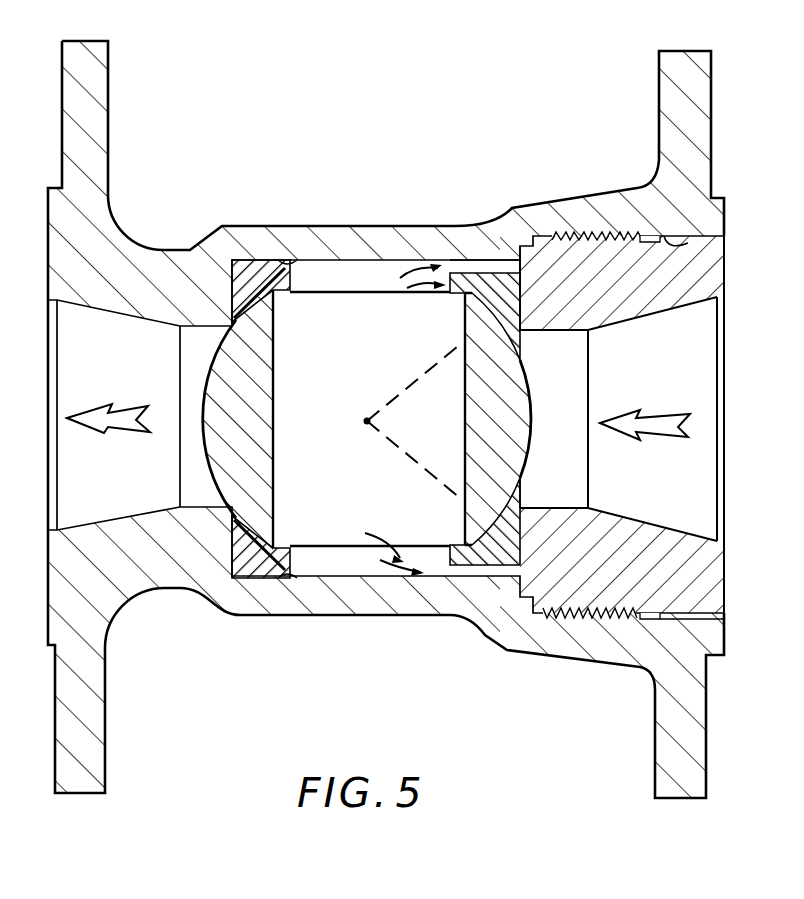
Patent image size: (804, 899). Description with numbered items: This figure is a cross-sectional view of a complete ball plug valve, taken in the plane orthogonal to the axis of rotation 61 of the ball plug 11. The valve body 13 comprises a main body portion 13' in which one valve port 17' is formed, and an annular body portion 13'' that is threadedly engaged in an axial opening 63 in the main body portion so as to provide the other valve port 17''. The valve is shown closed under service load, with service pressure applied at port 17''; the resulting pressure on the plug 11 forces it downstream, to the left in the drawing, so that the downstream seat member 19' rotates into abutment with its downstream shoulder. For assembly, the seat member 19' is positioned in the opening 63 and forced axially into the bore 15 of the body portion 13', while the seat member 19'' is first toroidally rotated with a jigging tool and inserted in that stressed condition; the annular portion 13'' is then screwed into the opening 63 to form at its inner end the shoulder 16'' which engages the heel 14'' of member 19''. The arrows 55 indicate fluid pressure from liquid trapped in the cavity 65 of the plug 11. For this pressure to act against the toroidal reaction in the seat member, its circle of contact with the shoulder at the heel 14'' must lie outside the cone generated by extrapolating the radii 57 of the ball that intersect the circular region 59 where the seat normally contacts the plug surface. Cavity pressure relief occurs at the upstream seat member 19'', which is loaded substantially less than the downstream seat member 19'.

The ball plug 11 is at (247, 328).
The valve body 13 is at (300, 625).
The main body portion 13' is at (338, 204).
The annular body portion 13'' is at (622, 467).
The heel 14'' is at (509, 217).
The bore 15 is at (290, 260).
The shoulder 16'' is at (576, 490).
The valve port 17' is at (108, 388).
The valve port 17'' is at (645, 394).
The downstream seat member 19' is at (248, 374).
The upstream seat member 19'' is at (485, 366).
The arrows 55 is at (400, 280).
The radii 57 is at (425, 365).
The circular region 59 is at (522, 372).
The axis of rotation 61 is at (366, 420).
The axial opening 63 is at (670, 247).
The cavity 65 is at (275, 332).